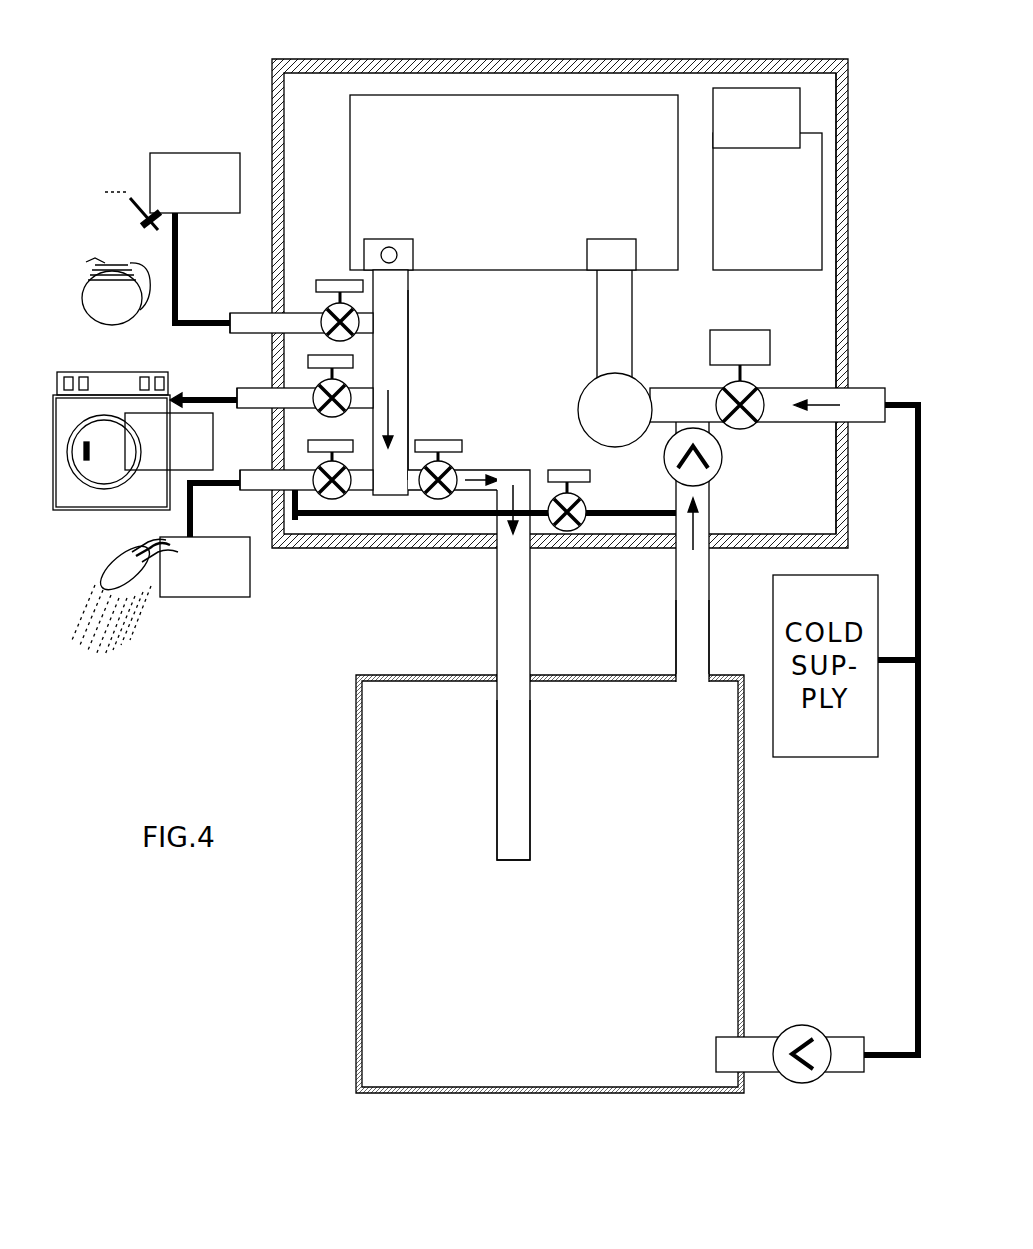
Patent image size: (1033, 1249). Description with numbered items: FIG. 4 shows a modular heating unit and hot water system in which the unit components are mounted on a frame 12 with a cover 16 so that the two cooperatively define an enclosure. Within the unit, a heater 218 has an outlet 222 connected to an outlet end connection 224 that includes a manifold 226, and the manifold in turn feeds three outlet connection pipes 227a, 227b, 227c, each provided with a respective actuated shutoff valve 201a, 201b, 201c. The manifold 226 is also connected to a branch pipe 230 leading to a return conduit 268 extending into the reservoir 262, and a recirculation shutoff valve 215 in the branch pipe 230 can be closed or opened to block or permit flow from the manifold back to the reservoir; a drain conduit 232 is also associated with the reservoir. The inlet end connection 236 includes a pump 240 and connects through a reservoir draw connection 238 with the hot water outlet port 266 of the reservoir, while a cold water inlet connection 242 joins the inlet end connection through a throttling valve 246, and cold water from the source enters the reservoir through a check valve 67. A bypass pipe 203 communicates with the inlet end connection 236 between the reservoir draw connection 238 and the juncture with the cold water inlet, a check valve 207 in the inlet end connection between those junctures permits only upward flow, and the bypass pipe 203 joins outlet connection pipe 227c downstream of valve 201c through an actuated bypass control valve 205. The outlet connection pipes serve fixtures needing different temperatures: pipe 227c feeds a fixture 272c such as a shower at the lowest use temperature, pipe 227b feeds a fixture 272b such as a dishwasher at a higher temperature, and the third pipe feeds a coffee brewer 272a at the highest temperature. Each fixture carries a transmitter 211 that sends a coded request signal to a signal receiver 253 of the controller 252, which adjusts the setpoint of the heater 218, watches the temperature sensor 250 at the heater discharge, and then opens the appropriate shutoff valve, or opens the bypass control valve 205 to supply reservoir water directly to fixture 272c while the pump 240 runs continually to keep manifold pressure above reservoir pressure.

The frame 12 is at (864, 146).
The cover 16 is at (848, 213).
The heater 218 is at (580, 135).
The outlet 222 is at (368, 253).
The temperature sensor 250 is at (392, 248).
The controller 252 is at (765, 213).
The signal receiver 253 is at (757, 112).
The outlet end connection 224 is at (432, 332).
The manifold 226 is at (410, 372).
The branch pipe 230 is at (470, 478).
The drain conduit 232 is at (531, 578).
The return conduit 268 is at (505, 639).
The shutoff valve 201a is at (279, 193).
The shutoff valve 201b is at (212, 442).
The shutoff valve 201c is at (265, 553).
The outlet connection pipe 227a is at (257, 307).
The outlet connection pipe 227b is at (270, 403).
The outlet connection pipe 227c is at (212, 568).
The recirculation shutoff valve 215 is at (430, 500).
The bypass pipe 203 is at (367, 520).
The pump 240 is at (594, 532).
The inlet end connection 236 is at (658, 355).
The cold water inlet connection 242 is at (806, 398).
The throttling valve 246 is at (762, 386).
The bypass control valve 205 is at (612, 449).
The reservoir draw connection 238 is at (712, 557).
The check valve 207 is at (713, 458).
The hot water outlet port 266 is at (695, 678).
The reservoir 262 is at (340, 794).
The check valve 67 is at (797, 1086).
The transmitter 211 is at (183, 199).
The coffee brewer 272a is at (100, 227).
The fixture 272b is at (115, 412).
The fixture 272c is at (138, 618).